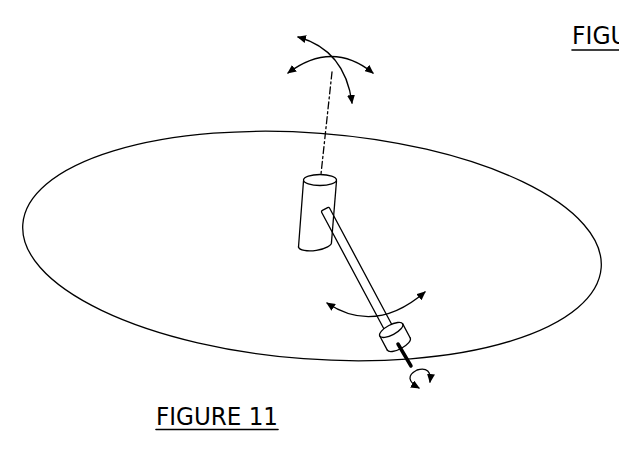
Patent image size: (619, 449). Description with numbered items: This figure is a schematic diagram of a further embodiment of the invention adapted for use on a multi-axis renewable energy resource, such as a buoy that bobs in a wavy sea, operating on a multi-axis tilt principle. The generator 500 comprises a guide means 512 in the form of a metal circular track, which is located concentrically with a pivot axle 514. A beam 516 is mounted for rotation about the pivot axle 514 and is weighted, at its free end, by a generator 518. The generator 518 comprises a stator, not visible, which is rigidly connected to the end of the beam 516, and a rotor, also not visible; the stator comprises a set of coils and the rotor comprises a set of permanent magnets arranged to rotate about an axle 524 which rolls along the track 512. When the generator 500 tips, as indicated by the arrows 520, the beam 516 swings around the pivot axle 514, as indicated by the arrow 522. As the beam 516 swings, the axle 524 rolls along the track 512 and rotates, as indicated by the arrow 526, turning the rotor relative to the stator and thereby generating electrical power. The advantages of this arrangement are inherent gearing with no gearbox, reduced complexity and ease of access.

The generator 500 is at (175, 100).
The guide means 512 is at (553, 205).
The pivot axle 514 is at (327, 197).
The beam 516 is at (347, 248).
The generator 518 is at (393, 332).
The arrows 520 is at (343, 57).
The arrow 522 is at (337, 308).
The axle 524 is at (403, 358).
The rotation 526 is at (421, 379).